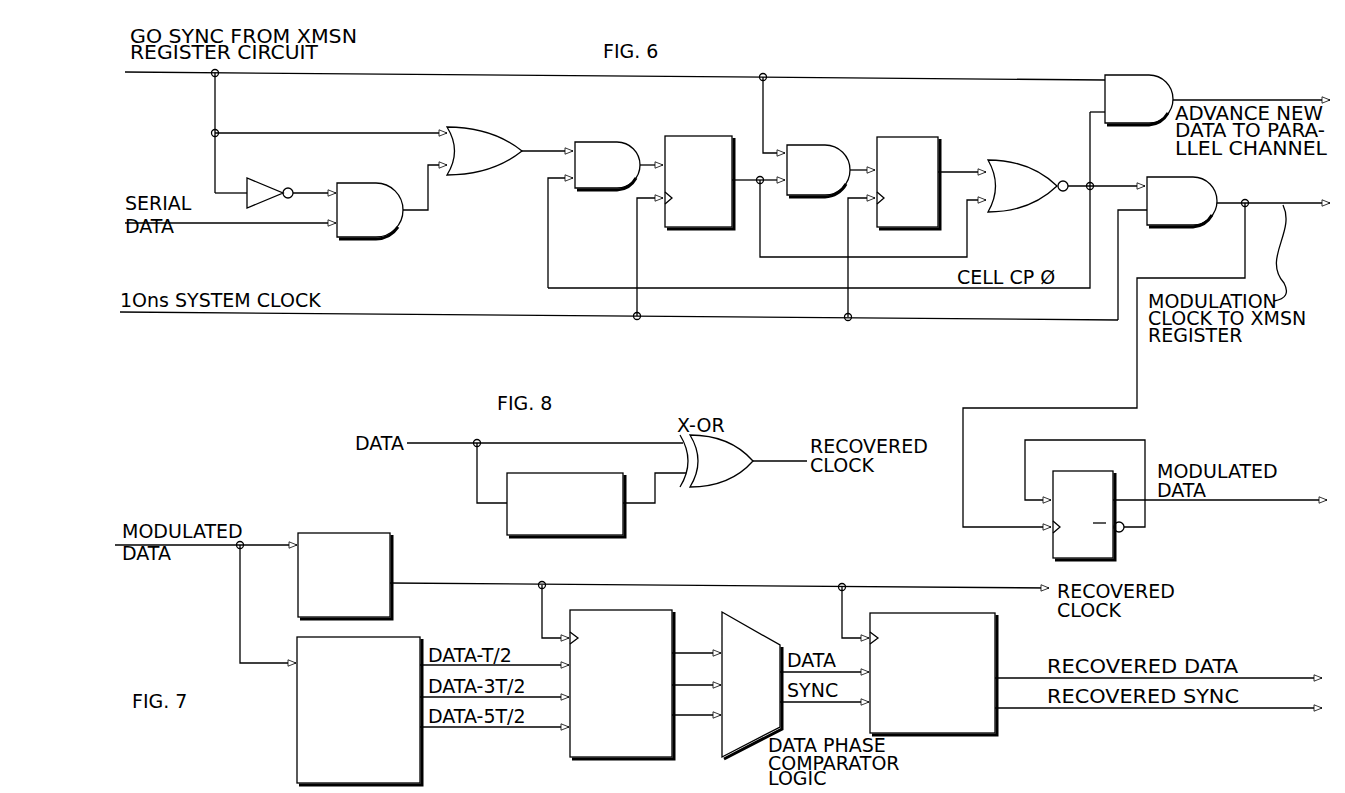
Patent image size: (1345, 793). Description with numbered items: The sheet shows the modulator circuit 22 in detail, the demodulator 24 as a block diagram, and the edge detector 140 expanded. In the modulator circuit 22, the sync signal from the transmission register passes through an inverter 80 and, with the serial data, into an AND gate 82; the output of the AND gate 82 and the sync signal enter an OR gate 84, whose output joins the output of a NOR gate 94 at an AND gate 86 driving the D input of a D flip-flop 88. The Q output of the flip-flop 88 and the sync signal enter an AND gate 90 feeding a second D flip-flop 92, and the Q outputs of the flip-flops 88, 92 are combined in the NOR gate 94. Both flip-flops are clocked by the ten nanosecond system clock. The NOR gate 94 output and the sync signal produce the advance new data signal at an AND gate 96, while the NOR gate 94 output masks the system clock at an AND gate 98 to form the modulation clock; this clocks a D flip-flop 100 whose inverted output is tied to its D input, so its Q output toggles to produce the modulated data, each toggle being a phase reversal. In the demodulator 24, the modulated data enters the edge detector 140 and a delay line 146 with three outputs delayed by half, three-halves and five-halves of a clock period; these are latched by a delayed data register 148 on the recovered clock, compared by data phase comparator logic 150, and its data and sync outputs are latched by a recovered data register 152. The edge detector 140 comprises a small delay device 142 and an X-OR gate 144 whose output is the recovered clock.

In FIG. 6, the modulator circuit 22 is at (534, 63).
In FIG. 7, the demodulator 24 is at (217, 516).
In FIG. 6, the inverter 80 is at (253, 187).
In FIG. 6, the AND gate 82 is at (391, 190).
In FIG. 6, the OR gate 84 is at (498, 131).
In FIG. 6, the AND gate 86 is at (597, 141).
In FIG. 6, the D flip-flop 88 is at (701, 140).
In FIG. 6, the AND gate 90 is at (797, 150).
In FIG. 6, the D flip-flop 92 is at (897, 146).
In FIG. 6, the NOR gate 94 is at (1003, 166).
In FIG. 6, the AND gate 96 is at (1145, 125).
In FIG. 6, the AND gate 98 is at (1200, 226).
In FIG. 6, the D flip-flop 100 is at (1058, 545).
In FIG. 8, the edge detector 140 is at (484, 424).
In FIG. 7, the edge detector 140 is at (383, 573).
In FIG. 8, the small delay device 142 is at (507, 518).
In FIG. 8, the X-OR gate 144 is at (725, 479).
In FIG. 7, the delay line 146 is at (414, 643).
In FIG. 7, the delayed data register 148 is at (590, 740).
In FIG. 7, the data phase comparator logic 150 is at (745, 636).
In FIG. 7, the recovered data register 152 is at (992, 620).